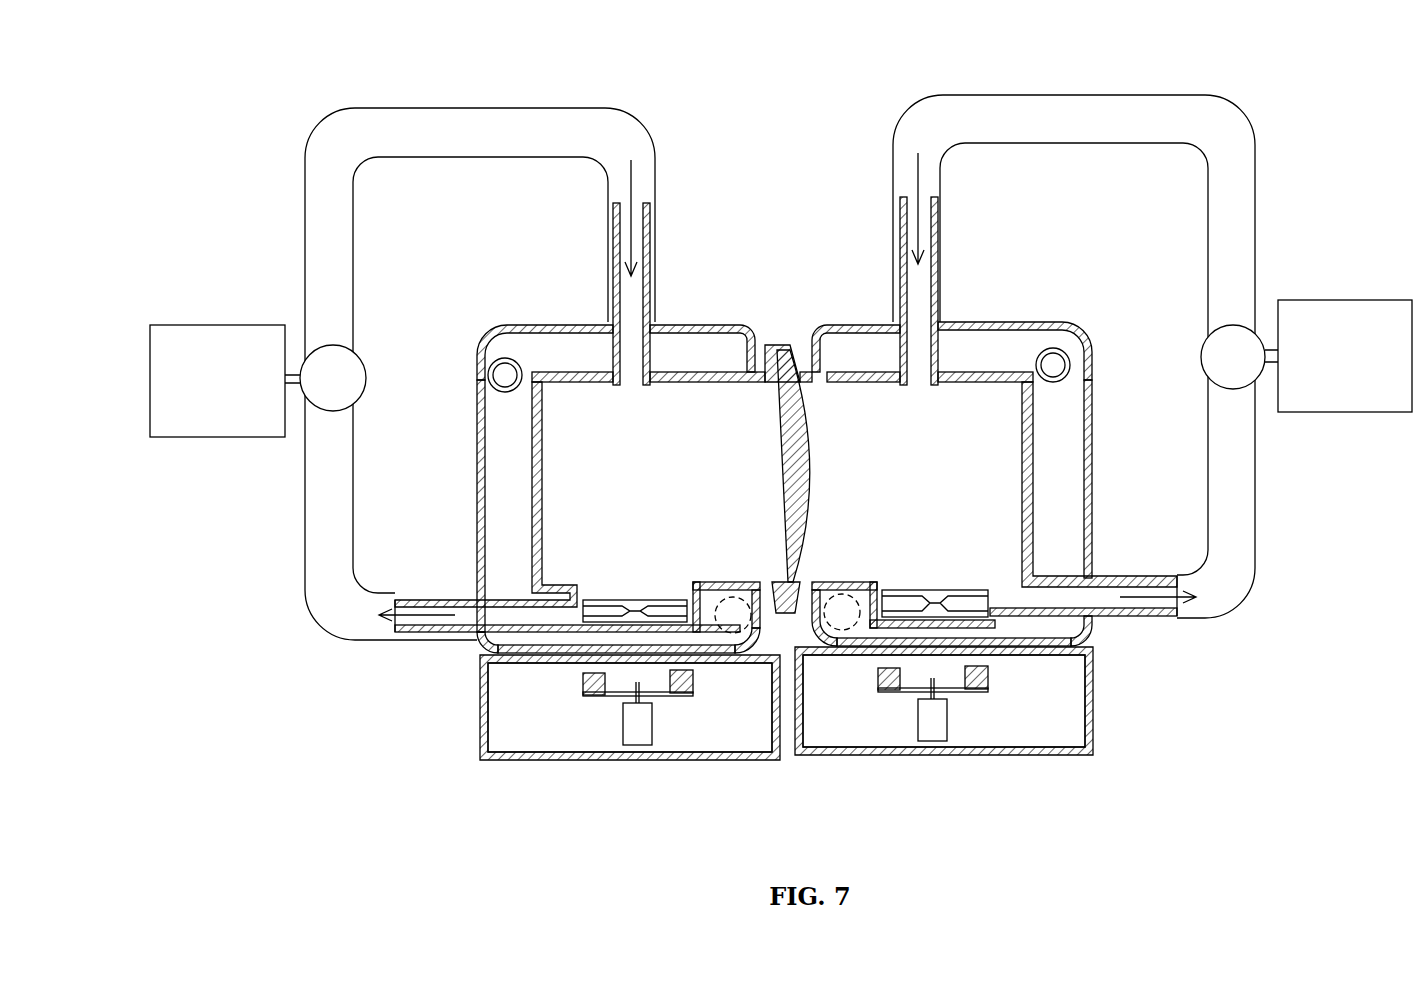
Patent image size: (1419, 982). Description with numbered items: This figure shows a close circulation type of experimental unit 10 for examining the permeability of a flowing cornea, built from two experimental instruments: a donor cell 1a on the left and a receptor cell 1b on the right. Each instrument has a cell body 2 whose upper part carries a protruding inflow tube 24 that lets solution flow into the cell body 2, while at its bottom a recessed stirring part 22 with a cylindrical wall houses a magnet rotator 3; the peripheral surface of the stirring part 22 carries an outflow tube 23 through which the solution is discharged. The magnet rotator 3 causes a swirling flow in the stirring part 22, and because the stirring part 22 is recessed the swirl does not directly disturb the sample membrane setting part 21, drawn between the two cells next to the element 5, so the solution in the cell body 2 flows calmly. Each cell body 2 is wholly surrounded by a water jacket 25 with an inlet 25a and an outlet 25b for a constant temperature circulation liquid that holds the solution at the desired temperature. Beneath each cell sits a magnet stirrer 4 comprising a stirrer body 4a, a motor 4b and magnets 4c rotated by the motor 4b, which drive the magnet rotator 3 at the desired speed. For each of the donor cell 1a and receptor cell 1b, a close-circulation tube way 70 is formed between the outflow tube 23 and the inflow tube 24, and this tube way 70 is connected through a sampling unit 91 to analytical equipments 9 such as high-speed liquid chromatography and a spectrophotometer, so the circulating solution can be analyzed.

The experimental unit 10 is at (443, 70).
The close-circulation type tube way 70 is at (332, 124).
The analytical equipments 9 is at (216, 437).
The sampling unit 91 is at (357, 372).
The inflow tube 24 is at (654, 230).
The outlet of constant temperature circulation liquid 25b is at (497, 325).
The water jacket 25 is at (478, 480).
The donor cell 1a is at (555, 323).
The receptor cell 1b is at (1000, 322).
The cell body 2 is at (532, 450).
The outflow tube 23 is at (404, 634).
The magnet rotator 3 is at (620, 600).
The stirring part 22 is at (688, 595).
The inlet of constant temperature circulation liquid 25a is at (733, 600).
The partition wall 5 is at (807, 427).
The sample membrane setting part 21 is at (783, 348).
The magnet stirrer 4 is at (542, 760).
The stirrer body 4a is at (728, 760).
The motor 4b is at (640, 745).
The magnets 4c is at (592, 696).